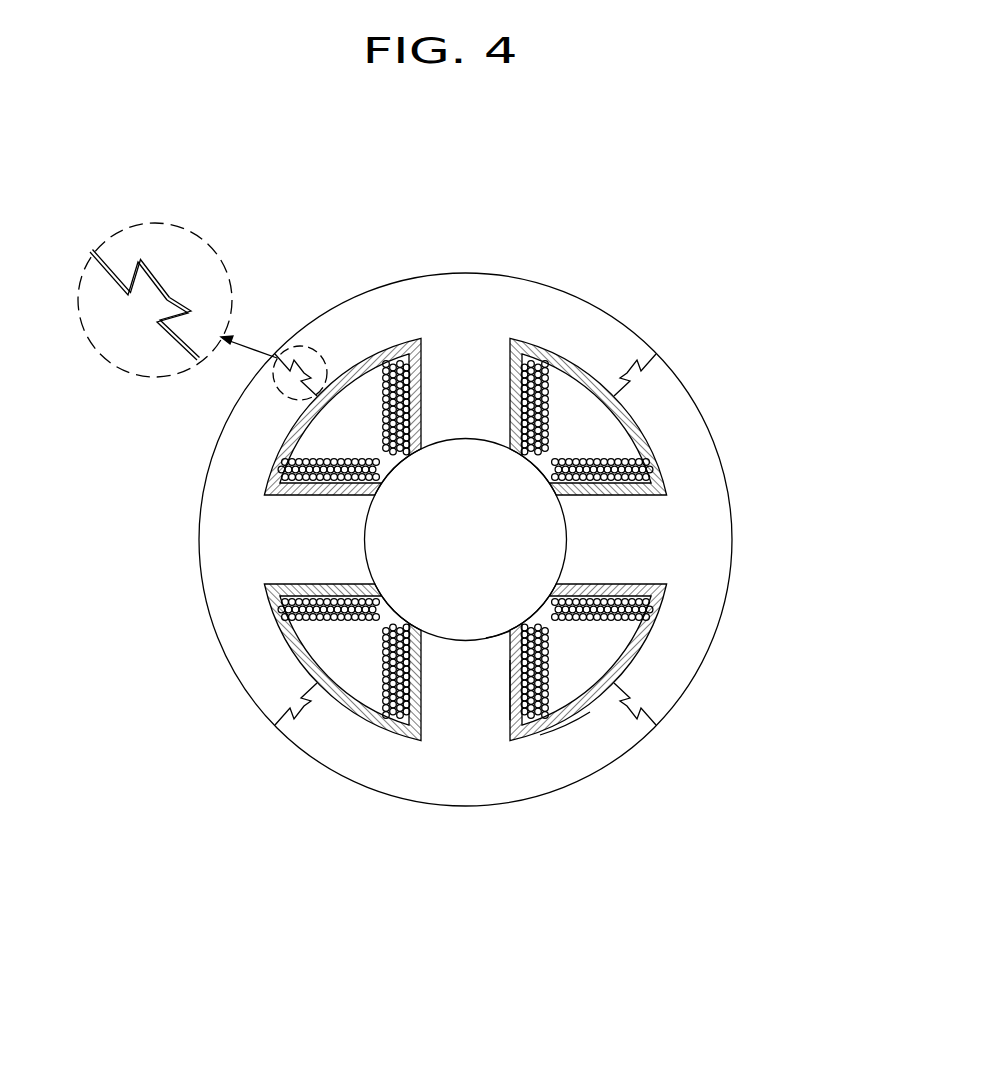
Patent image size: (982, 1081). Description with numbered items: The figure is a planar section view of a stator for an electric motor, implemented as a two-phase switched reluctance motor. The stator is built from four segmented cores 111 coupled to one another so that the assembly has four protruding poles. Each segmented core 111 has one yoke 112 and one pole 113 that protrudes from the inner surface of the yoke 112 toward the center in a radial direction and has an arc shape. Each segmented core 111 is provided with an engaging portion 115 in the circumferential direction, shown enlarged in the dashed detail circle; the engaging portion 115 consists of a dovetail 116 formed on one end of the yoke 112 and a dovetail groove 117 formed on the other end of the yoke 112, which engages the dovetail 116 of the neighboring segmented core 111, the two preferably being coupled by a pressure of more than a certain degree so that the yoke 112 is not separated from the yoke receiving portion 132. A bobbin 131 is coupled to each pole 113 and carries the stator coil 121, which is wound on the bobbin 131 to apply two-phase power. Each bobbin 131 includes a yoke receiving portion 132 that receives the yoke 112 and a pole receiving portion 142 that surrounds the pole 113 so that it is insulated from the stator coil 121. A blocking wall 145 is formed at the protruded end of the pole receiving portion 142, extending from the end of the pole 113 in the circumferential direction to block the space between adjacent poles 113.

The segmented core 111 is at (556, 291).
The yoke 112 is at (687, 617).
The pole 113 is at (607, 538).
The engaging portion 115 is at (217, 172).
The dovetail 116 is at (145, 283).
The dovetail groove 117 is at (160, 288).
The stator coil 121 is at (548, 396).
The bobbin 131 is at (608, 420).
The yoke receiving portion 132 is at (560, 723).
The pole receiving portion 142 is at (510, 689).
The blocking wall 145 is at (510, 626).